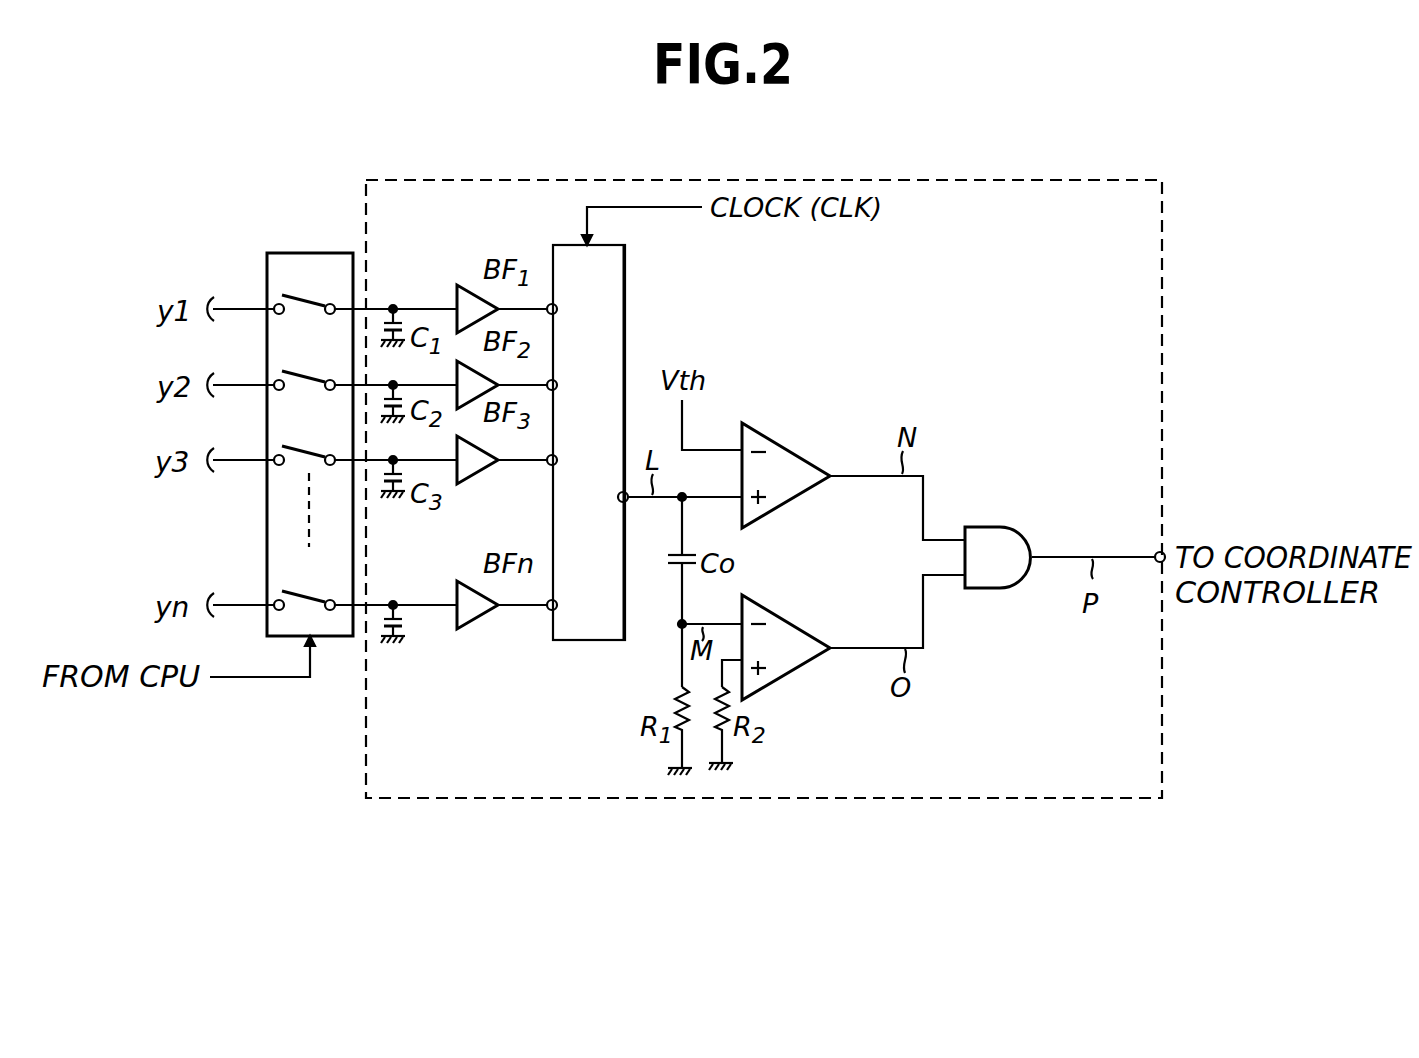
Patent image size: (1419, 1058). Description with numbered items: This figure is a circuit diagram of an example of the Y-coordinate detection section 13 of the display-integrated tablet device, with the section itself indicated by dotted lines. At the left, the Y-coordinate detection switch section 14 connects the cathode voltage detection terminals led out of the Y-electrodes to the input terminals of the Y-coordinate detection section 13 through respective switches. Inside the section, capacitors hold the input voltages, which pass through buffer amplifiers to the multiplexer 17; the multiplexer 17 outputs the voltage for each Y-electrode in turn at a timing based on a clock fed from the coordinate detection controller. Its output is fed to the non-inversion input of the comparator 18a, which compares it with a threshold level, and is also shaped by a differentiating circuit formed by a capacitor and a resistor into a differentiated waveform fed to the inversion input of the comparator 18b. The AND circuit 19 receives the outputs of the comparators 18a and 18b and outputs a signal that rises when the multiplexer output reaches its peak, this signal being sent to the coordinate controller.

The Y-coordinate detection section 13 is at (1163, 230).
The Y-coordinate detection switch section 14 is at (306, 253).
The multiplexer 17 is at (628, 298).
The comparator 18a is at (797, 453).
The comparator 18b is at (790, 674).
The AND circuit 19 is at (1015, 528).